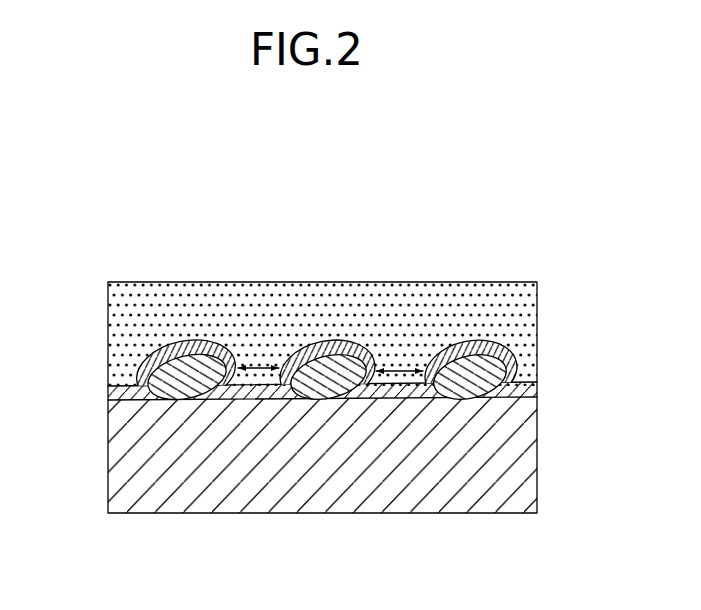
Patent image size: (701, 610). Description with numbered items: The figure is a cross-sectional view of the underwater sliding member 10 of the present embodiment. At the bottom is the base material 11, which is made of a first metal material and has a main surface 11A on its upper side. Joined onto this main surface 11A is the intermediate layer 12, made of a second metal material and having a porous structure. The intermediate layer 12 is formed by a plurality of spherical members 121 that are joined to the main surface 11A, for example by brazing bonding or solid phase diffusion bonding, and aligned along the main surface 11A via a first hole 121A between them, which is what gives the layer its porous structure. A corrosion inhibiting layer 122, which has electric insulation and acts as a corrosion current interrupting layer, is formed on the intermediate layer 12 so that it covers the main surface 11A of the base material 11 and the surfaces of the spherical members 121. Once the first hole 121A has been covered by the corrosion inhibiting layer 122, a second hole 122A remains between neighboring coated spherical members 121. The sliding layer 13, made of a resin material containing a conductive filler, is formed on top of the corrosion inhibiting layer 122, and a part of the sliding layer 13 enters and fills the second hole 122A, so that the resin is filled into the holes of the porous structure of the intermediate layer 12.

The underwater sliding member 10 is at (556, 241).
The base material 11 is at (128, 459).
The main surface 11A is at (127, 402).
The intermediate layer 12 is at (335, 379).
The spherical member 121 is at (484, 381).
The first hole 121A is at (397, 369).
The corrosion inhibiting layer 122 is at (473, 344).
The second hole 122A is at (256, 366).
The sliding layer 13 is at (148, 298).